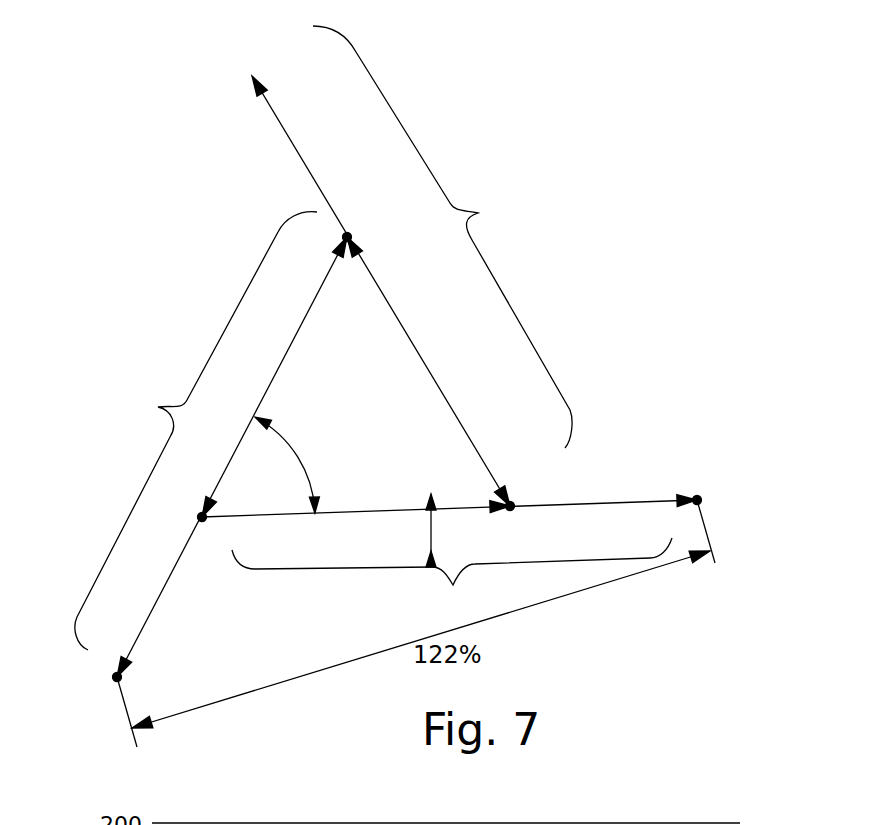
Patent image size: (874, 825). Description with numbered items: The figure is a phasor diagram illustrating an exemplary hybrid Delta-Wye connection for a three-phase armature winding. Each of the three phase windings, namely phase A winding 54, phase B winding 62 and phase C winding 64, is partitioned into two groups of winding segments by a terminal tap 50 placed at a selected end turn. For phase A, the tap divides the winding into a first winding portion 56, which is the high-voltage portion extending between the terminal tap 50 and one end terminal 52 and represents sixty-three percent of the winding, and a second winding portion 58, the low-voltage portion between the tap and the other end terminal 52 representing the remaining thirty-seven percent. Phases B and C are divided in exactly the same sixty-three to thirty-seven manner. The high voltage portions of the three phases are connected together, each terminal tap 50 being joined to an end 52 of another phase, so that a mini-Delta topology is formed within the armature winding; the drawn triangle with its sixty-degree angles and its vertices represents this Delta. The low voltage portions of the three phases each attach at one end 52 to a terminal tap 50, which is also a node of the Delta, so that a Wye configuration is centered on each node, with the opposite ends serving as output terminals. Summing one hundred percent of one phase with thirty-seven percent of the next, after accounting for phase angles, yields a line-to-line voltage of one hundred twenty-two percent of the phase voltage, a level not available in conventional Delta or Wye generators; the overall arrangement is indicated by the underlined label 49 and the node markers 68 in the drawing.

The triangular pattern 49 is at (371, 399).
The terminal tap 50 is at (345, 237).
The end terminal 52 is at (250, 80).
The phase A winding 54 is at (442, 603).
The A1 winding portion 56 is at (431, 572).
The A2 winding portion 58 is at (618, 475).
The phase B winding 62 is at (150, 388).
The phase C winding 64 is at (512, 200).
The vertex point 68 is at (348, 234).